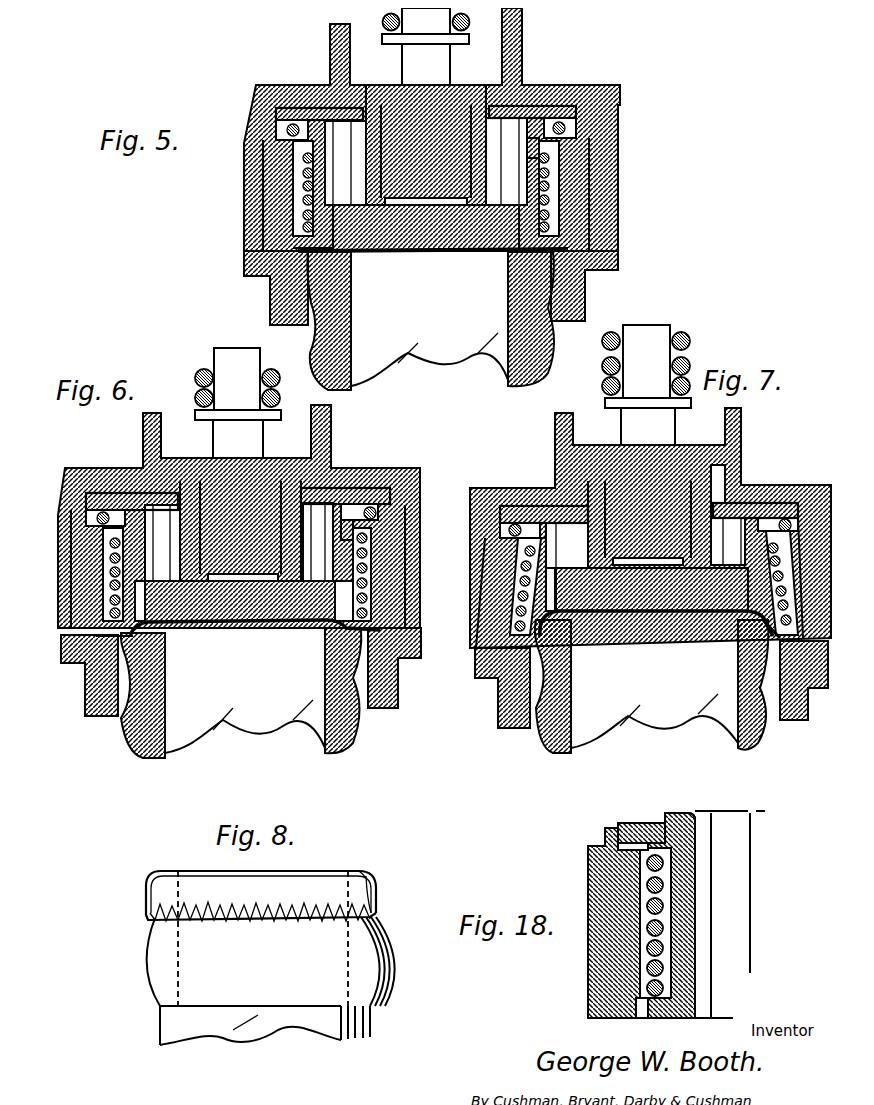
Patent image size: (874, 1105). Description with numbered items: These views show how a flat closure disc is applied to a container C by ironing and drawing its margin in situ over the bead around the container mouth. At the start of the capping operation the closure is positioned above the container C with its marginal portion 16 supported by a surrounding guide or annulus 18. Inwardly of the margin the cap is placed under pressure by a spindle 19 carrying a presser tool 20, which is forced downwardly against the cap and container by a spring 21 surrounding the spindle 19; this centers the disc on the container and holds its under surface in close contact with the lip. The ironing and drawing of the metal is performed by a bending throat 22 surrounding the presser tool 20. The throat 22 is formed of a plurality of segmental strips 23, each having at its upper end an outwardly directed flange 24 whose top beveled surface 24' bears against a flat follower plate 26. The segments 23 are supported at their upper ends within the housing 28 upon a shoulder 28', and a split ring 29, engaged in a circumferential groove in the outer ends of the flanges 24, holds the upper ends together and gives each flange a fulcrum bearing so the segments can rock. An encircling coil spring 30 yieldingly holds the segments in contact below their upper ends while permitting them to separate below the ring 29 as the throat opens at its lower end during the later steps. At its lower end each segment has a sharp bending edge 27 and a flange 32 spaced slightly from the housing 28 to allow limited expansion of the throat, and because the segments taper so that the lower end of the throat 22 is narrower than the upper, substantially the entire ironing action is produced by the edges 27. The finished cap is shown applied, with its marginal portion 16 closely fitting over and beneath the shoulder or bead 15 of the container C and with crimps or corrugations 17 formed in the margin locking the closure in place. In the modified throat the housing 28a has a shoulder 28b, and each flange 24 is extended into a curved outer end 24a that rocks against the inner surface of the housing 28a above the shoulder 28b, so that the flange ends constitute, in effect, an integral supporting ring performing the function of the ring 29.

In FIG. 7, the shoulder or bead 15 is at (540, 622).
In FIG. 8, the shoulder or bead 15 is at (148, 872).
In FIG. 5, the marginal portion 16 is at (560, 240).
In FIG. 8, the marginal portion 16 is at (138, 882).
In FIG. 8, the crimps or corrugations 17 is at (250, 922).
In FIG. 5, the guide or annulus 18 is at (580, 292).
In FIG. 6, the guide or annulus 18 is at (95, 695).
In FIG. 7, the guide or annulus 18 is at (492, 703).
In FIG. 5, the spindle 19 is at (397, 37).
In FIG. 7, the spindle 19 is at (652, 327).
In FIG. 5, the presser tool 20 is at (417, 218).
In FIG. 6, the presser tool 20 is at (247, 592).
In FIG. 7, the presser tool 20 is at (658, 585).
In FIG. 5, the spring 21 is at (462, 13).
In FIG. 6, the spring 21 is at (273, 390).
In FIG. 7, the spring 21 is at (683, 340).
In FIG. 5, the bending throat 22 is at (500, 155).
In FIG. 6, the bending throat 22 is at (137, 533).
In FIG. 7, the bending throat 22 is at (722, 520).
In FIG. 5, the segmental strips 23 is at (297, 150).
In FIG. 6, the segmental strips 23 is at (360, 557).
In FIG. 7, the segmental strips 23 is at (510, 597).
In FIG. 5, the outwardly directed flange 24 is at (319, 88).
In FIG. 6, the outwardly directed flange 24 is at (132, 477).
In FIG. 7, the outwardly directed flange 24 is at (555, 536).
In FIG. 18, the outwardly directed flange 24 is at (673, 898).
In FIG. 5, the top beveled surface 24' is at (536, 86).
In FIG. 7, the top beveled surface 24' is at (544, 487).
In FIG. 18, the curved outer end 24a is at (620, 818).
In FIG. 5, the follower plate 26 is at (268, 103).
In FIG. 6, the follower plate 26 is at (80, 487).
In FIG. 7, the follower plate 26 is at (760, 500).
In FIG. 5, the bending edge 27 is at (262, 264).
In FIG. 6, the bending edge 27 is at (318, 637).
In FIG. 7, the bending edge 27 is at (483, 670).
In FIG. 5, the housing 28 is at (449, 129).
In FIG. 6, the housing 28 is at (243, 516).
In FIG. 7, the housing 28 is at (630, 528).
In FIG. 5, the shoulder 28' is at (591, 127).
In FIG. 6, the shoulder 28' is at (329, 525).
In FIG. 18, the housing 28a is at (580, 930).
In FIG. 18, the shoulder 28b is at (637, 843).
In FIG. 5, the split ring 29 is at (556, 114).
In FIG. 6, the split ring 29 is at (362, 499).
In FIG. 7, the split ring 29 is at (504, 516).
In FIG. 5, the coil spring 30 is at (284, 190).
In FIG. 6, the coil spring 30 is at (94, 560).
In FIG. 7, the coil spring 30 is at (504, 572).
In FIG. 5, the flange 32 is at (290, 242).
In FIG. 6, the flange 32 is at (88, 631).
In FIG. 7, the flange 32 is at (757, 630).
In FIG. 5, the container C is at (430, 321).
In FIG. 6, the container C is at (237, 727).
In FIG. 7, the container C is at (677, 710).
In FIG. 8, the container C is at (267, 1010).